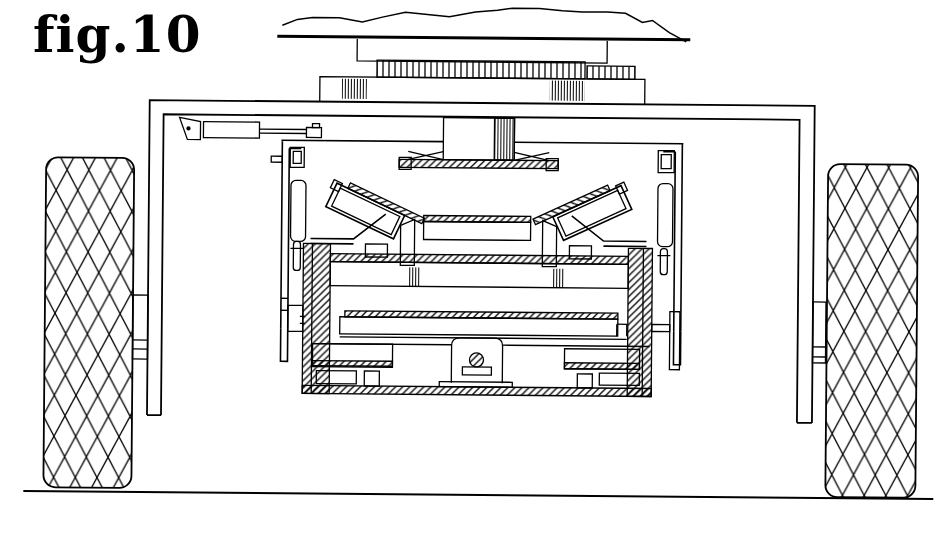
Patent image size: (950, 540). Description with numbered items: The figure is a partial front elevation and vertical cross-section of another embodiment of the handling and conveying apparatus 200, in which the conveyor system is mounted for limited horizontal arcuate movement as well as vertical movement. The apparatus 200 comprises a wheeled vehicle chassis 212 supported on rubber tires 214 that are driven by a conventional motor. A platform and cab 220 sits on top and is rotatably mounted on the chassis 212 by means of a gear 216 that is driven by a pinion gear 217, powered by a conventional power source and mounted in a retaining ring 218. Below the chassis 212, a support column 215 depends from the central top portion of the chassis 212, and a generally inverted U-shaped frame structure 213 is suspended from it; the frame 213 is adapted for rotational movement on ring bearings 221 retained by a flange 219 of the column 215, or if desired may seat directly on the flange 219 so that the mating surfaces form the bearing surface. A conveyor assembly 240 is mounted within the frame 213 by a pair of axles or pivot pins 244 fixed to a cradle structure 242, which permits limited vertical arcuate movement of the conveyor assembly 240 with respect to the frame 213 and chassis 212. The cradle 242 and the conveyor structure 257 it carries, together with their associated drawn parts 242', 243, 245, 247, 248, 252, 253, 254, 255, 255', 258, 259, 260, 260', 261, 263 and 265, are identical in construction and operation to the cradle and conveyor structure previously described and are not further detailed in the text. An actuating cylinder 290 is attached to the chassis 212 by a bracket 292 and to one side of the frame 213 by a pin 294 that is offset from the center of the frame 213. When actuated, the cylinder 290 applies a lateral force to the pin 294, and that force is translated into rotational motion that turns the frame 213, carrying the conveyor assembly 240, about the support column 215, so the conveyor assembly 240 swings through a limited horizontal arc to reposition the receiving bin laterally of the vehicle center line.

The apparatus 200 is at (748, 80).
The vehicle chassis 212 is at (813, 132).
The frame structure 213 is at (680, 347).
The rubber tires 214 is at (86, 161).
The support column 215 is at (490, 144).
The gear 216 is at (375, 66).
The pinion gear 217 is at (633, 72).
The retaining ring 218 is at (318, 90).
The flange 219 is at (560, 164).
The platform and cab 220 is at (655, 32).
The ring bearings 221 is at (518, 150).
The conveyor assembly 240 is at (488, 208).
The cradle structure 242 is at (514, 268).
The housing bracket 242' is at (249, 312).
The screw block 243 is at (500, 392).
The axles or pivot pins 244 is at (293, 335).
The pad 245 is at (340, 378).
The spacer block 247 is at (377, 379).
The guide pin 248 is at (290, 233).
The bracket 252 is at (672, 165).
The mounting block 253 is at (675, 158).
The slide bracket 254 is at (306, 288).
The support plate 255 is at (479, 287).
The lower plate 255' is at (481, 394).
The conveyor structure 257 is at (623, 230).
The belt 258 is at (428, 203).
The roller frame 259 is at (318, 208).
The side roller 260 is at (479, 198).
The center roller 260' is at (478, 211).
The guide cylinder 261 is at (297, 187).
The plate end 263 is at (630, 313).
The slide bar 265 is at (433, 328).
The actuating cylinder 290 is at (231, 142).
The bracket 292 is at (182, 132).
The pin 294 is at (320, 133).